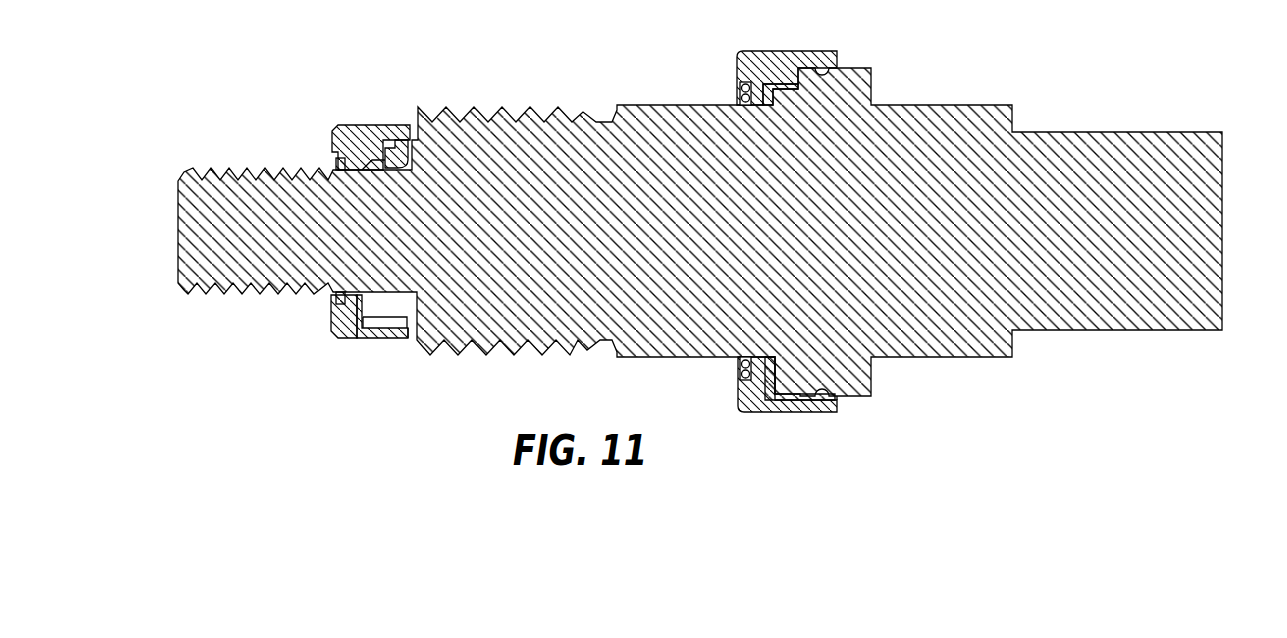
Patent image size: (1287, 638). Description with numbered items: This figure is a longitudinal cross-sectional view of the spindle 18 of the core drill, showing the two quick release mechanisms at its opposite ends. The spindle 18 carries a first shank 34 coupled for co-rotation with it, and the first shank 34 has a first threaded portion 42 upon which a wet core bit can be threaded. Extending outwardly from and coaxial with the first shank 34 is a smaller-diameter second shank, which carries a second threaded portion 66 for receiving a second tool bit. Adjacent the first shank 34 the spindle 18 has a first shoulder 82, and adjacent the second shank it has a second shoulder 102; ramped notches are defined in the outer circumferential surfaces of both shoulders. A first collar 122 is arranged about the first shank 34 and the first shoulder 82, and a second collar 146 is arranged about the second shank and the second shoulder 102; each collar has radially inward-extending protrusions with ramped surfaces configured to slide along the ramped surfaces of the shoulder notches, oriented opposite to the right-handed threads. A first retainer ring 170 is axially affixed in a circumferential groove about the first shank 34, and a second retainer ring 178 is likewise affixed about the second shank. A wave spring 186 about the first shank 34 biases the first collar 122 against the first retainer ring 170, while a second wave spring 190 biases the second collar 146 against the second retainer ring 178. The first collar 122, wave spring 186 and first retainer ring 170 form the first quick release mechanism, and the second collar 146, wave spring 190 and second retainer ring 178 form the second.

The spindle 18 is at (945, 167).
The second threaded portion 66 is at (203, 167).
The first threaded portion 42 is at (510, 106).
The first shank 34 is at (665, 102).
The second collar 146 is at (366, 124).
The wave spring 190 is at (402, 140).
The second shoulder 102 is at (359, 334).
The second retainer ring 178 is at (338, 297).
The first collar 122 is at (772, 51).
The wave spring 186 is at (790, 100).
The first shoulder 82 is at (770, 398).
The first retainer ring 170 is at (740, 360).